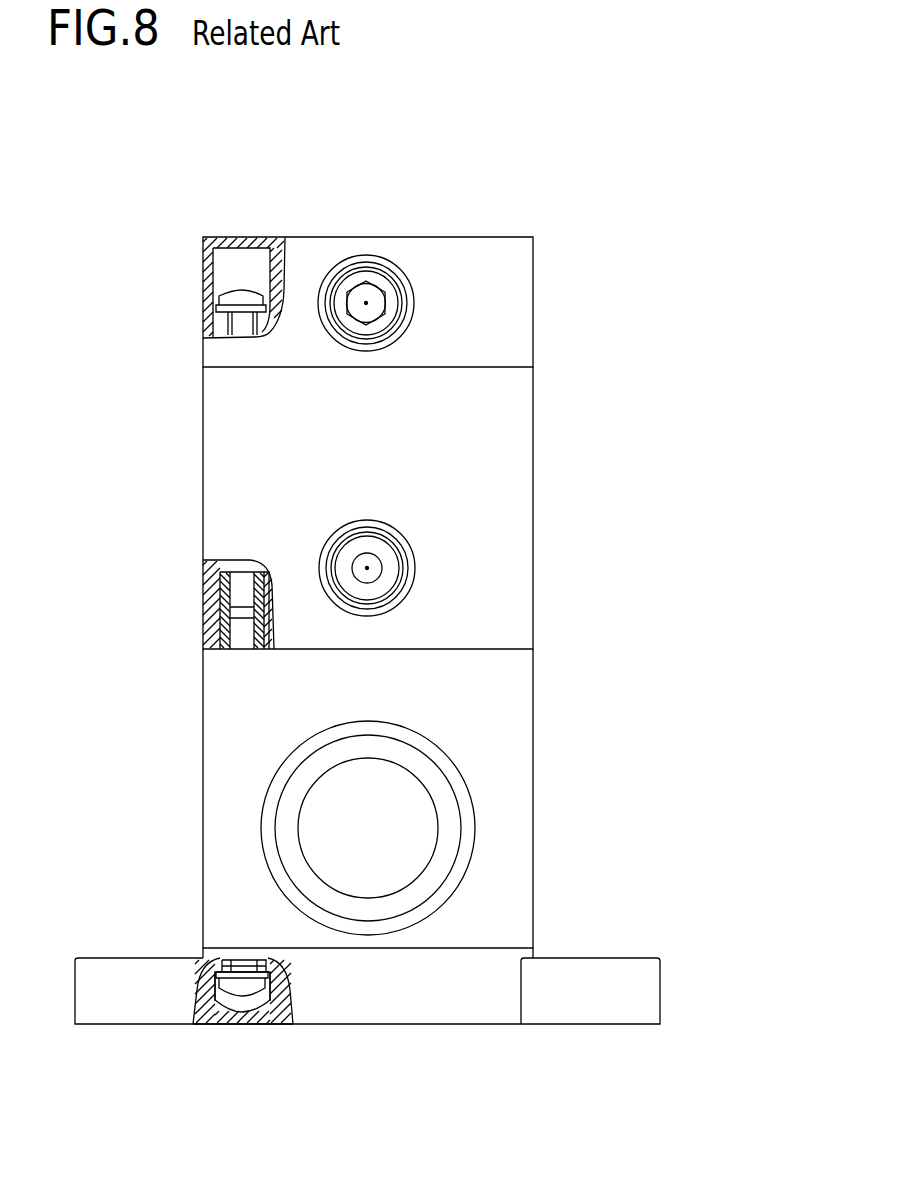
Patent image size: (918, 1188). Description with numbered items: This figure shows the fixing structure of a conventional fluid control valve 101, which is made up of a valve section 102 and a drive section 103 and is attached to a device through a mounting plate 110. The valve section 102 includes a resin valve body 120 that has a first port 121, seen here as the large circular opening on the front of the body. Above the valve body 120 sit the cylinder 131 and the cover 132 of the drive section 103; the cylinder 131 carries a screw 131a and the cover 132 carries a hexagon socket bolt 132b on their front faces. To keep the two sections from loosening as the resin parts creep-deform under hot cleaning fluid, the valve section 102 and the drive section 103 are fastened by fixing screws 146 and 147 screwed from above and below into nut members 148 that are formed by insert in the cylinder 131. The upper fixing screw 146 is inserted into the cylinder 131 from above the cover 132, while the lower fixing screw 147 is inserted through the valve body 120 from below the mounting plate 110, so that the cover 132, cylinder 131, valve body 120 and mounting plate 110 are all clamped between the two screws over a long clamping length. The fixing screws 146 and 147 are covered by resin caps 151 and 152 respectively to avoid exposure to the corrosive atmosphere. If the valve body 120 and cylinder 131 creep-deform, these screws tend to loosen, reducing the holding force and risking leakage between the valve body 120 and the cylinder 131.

The fluid control valve 101 is at (636, 152).
The valve section 102 is at (705, 653).
The drive section 103 is at (705, 230).
The mounting plate 110 is at (448, 1000).
The valve body 120 is at (515, 706).
The first port 121 is at (388, 826).
The cylinder 131 is at (505, 436).
The screw 131a is at (372, 567).
The cover 132 is at (513, 343).
The hexagon socket bolt 132b is at (372, 303).
The fixing screw 146 is at (236, 298).
The fixing screw 147 is at (232, 990).
The nut member 148 is at (220, 618).
The resin cap 151 is at (239, 240).
The resin cap 152 is at (260, 1010).